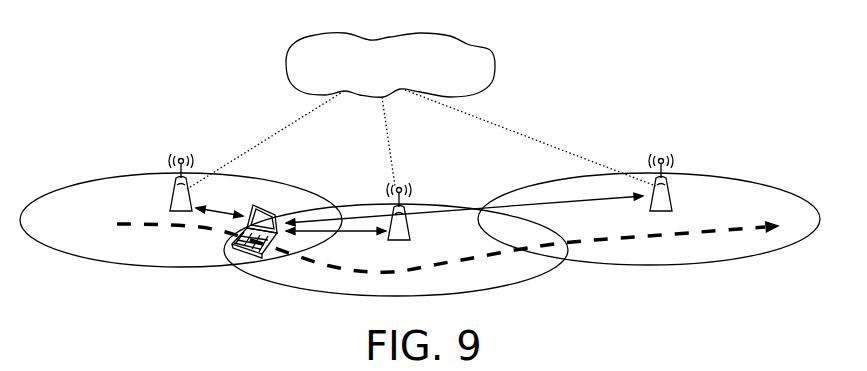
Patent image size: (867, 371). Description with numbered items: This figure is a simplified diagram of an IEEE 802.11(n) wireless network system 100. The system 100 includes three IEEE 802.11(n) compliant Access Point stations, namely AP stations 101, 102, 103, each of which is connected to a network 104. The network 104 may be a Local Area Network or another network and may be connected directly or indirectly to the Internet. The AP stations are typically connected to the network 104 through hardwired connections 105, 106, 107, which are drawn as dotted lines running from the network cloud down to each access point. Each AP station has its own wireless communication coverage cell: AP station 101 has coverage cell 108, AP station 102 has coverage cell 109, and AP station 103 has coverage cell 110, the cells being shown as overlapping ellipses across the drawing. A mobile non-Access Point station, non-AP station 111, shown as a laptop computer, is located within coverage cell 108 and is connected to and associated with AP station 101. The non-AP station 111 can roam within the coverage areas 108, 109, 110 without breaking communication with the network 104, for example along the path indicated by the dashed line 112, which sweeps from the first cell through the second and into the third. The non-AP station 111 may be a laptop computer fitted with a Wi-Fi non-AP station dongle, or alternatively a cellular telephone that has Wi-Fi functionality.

The wireless network system 100 is at (542, 28).
The AP station 101 is at (169, 204).
The AP station 102 is at (411, 232).
The AP station 103 is at (672, 203).
The network 104 is at (372, 85).
The hardwired connection 105 is at (289, 126).
The hardwired connection 106 is at (389, 144).
The hardwired connection 107 is at (491, 122).
The coverage cell 108 is at (62, 251).
The coverage cell 109 is at (304, 288).
The coverage cell 110 is at (661, 266).
The non-AP station 111 is at (272, 213).
The dashed line 112 is at (603, 241).